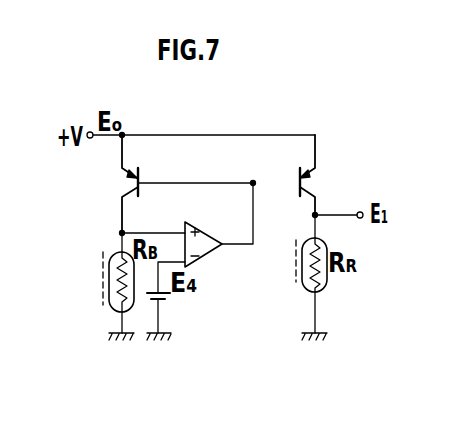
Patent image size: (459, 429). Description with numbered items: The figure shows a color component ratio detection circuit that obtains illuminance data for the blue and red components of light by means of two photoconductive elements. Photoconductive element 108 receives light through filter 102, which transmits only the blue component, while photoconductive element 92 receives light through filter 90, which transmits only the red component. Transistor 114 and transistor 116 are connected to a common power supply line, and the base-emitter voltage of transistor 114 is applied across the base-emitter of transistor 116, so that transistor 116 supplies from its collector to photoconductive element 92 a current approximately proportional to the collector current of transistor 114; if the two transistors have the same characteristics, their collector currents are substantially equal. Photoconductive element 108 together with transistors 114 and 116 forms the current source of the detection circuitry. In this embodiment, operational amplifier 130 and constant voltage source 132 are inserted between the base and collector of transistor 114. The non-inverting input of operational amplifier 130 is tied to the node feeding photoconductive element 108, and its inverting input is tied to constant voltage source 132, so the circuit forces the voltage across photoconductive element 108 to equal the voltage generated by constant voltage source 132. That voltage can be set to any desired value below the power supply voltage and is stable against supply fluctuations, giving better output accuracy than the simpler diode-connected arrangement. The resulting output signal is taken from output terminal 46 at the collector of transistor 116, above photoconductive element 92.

The transistor 114 is at (130, 182).
The transistor 116 is at (312, 183).
The filter 102 is at (103, 268).
The photoconductive element 108 is at (108, 296).
The operational amplifier 130 is at (205, 257).
The constant voltage source 132 is at (170, 296).
The output terminal 46 is at (362, 218).
The photoconductive element 92 is at (326, 286).
The filter 90 is at (296, 282).